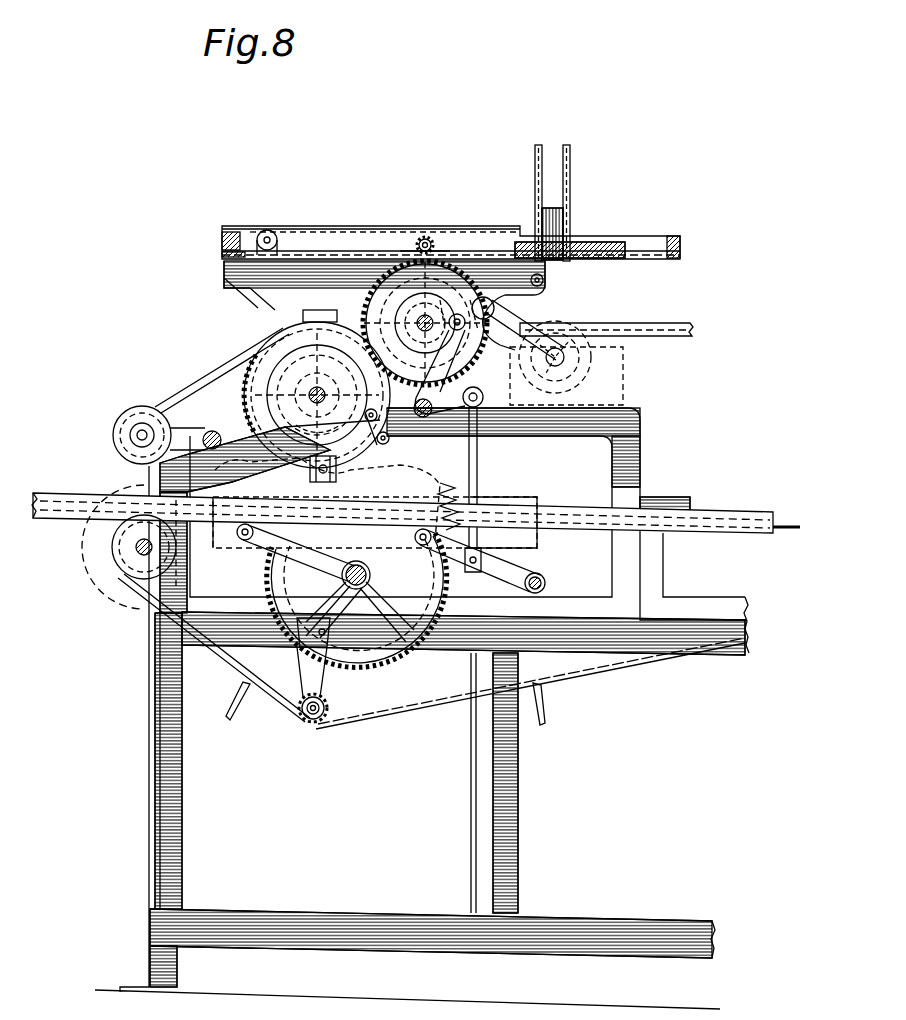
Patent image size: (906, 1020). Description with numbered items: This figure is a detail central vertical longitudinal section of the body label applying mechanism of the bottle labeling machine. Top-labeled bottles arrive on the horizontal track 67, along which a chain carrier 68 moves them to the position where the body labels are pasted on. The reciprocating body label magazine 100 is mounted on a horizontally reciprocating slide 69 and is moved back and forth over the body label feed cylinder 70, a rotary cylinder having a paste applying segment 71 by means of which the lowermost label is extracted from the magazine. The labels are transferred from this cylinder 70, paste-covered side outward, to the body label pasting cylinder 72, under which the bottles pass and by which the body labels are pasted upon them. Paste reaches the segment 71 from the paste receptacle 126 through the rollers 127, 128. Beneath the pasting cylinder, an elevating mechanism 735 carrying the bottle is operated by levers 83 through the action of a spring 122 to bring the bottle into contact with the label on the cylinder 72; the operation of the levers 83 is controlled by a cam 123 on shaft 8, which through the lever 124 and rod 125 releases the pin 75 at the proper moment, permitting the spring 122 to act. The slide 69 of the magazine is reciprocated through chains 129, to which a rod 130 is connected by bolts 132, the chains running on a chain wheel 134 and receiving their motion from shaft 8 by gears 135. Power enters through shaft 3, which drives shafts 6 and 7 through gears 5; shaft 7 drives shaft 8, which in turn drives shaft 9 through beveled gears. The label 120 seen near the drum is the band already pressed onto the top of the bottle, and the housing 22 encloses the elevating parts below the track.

The shaft 3 is at (318, 434).
The gears 5 is at (366, 662).
The shaft 6 is at (372, 575).
The shaft 7 is at (312, 392).
The shaft 8 is at (415, 318).
The shaft 9 is at (650, 323).
The housing 22 is at (375, 503).
The track 67 is at (56, 520).
The chain carrier 68 is at (118, 590).
The slide 69 is at (590, 242).
The body label feed cylinder 70 is at (425, 323).
The paste applying segment 71 is at (531, 292).
The body label pasting cylinder 72 is at (268, 362).
The pin 75 is at (476, 570).
The levers 83 is at (391, 558).
The body label magazine 100 is at (567, 197).
The label 120 is at (360, 463).
The spring 122 is at (463, 494).
The cam 123 is at (435, 341).
The lever 124 is at (462, 378).
The rod 125 is at (478, 458).
The paste receptacle 126 is at (623, 377).
The roller 127 is at (560, 348).
The roller 128 is at (520, 320).
The chains 129 is at (385, 232).
The rod 130 is at (494, 248).
The bolts 132 is at (409, 245).
The chain wheel 134 is at (277, 240).
The gears 135 is at (428, 237).
The bracket 735 is at (248, 506).